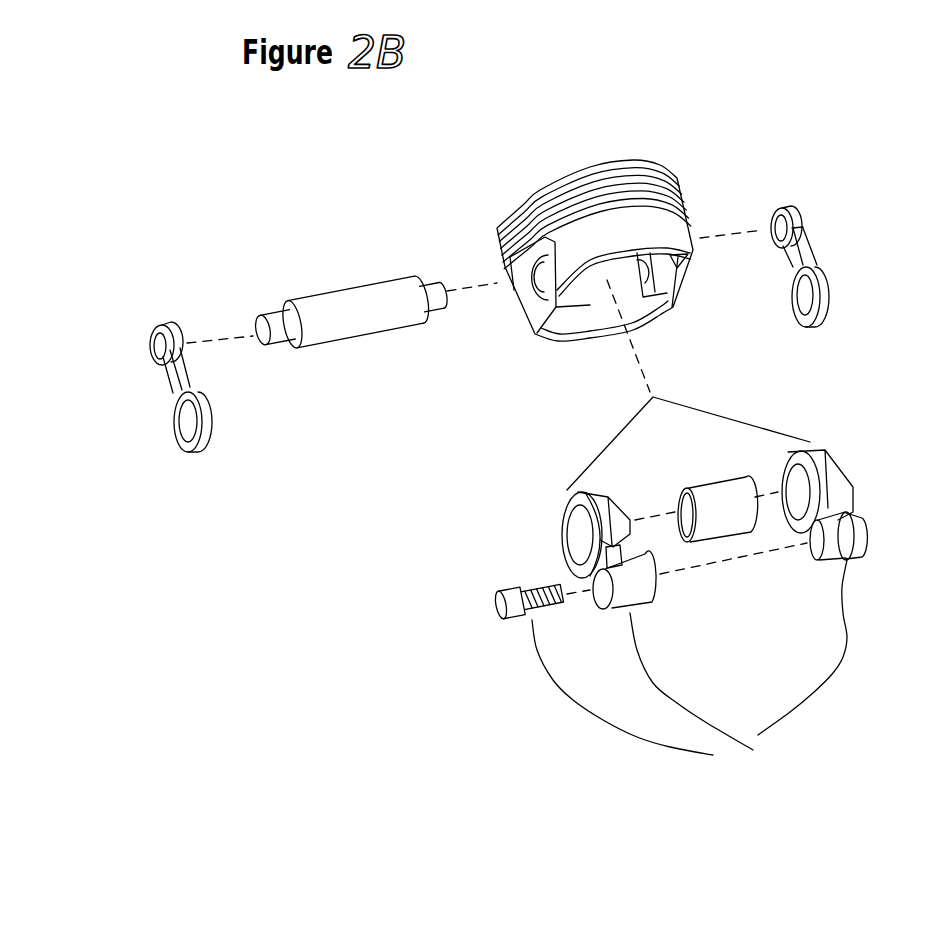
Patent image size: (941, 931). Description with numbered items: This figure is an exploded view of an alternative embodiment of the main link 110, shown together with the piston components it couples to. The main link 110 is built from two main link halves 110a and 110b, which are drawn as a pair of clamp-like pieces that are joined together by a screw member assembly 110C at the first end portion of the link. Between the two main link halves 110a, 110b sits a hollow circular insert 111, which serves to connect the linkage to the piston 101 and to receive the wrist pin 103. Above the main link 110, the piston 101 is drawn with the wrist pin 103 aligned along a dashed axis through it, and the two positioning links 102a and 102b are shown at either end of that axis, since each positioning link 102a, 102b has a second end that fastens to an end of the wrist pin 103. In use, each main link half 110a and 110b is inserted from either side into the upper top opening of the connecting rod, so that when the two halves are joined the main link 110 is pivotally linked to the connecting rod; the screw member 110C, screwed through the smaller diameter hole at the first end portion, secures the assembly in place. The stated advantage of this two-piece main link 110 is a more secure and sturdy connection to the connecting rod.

The piston 101 is at (630, 161).
The positioning link 102a is at (205, 460).
The positioning link 102b is at (788, 203).
The wrist pin 103 is at (266, 320).
The main link 110 is at (709, 590).
The main link half 110a is at (563, 518).
The main link half 110b is at (835, 462).
The screw member 110C is at (878, 765).
The hollow circular insert 111 is at (703, 483).